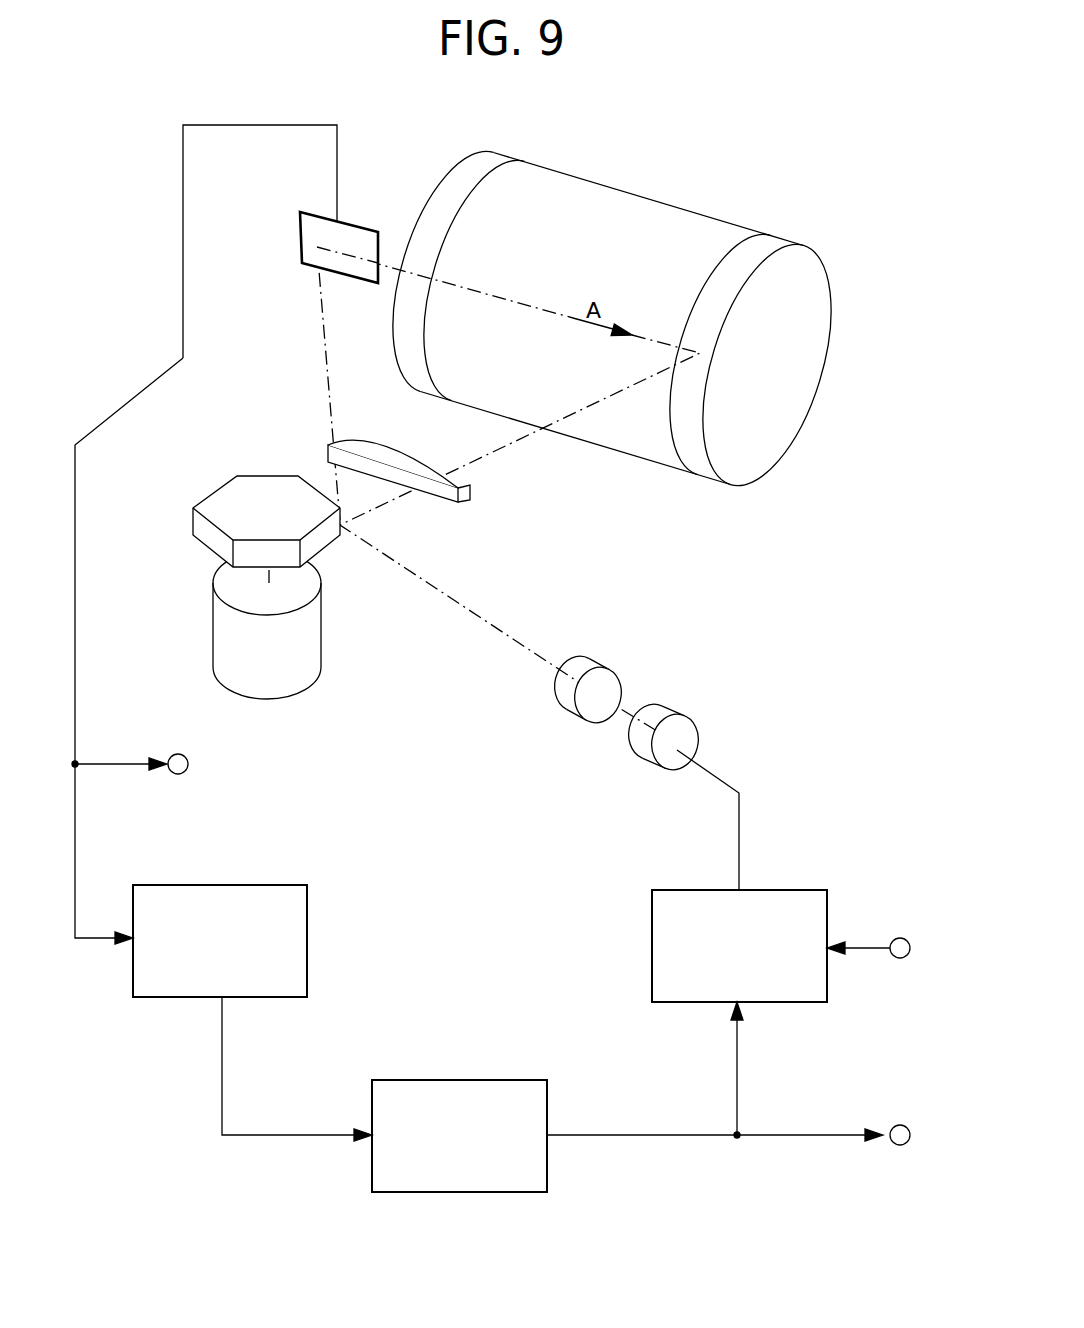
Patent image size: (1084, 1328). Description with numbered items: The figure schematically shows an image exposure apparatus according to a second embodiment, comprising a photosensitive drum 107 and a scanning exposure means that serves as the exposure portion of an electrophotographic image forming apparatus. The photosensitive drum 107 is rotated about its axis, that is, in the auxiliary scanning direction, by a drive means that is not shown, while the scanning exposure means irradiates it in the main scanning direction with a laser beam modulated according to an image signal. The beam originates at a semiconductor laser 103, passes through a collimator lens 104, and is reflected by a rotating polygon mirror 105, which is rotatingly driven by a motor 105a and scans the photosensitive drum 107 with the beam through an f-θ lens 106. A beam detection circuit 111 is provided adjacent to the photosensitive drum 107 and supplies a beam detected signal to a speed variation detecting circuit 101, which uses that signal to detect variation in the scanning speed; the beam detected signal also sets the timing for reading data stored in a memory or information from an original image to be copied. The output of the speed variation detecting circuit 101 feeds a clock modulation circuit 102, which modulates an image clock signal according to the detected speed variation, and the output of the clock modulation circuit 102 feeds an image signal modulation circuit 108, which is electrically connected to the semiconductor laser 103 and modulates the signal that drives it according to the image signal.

The speed variation detecting circuit 101 is at (268, 885).
The clock modulation circuit 102 is at (495, 1080).
The semiconductor laser 103 is at (682, 733).
The collimator lens 104 is at (608, 680).
The rotating polygon mirror 105 is at (225, 500).
The motor 105a is at (318, 633).
The f-θ lens 106 is at (387, 443).
The photosensitive drum 107 is at (683, 211).
The image signal modulation circuit 108 is at (783, 892).
The beam detection circuit 111 is at (306, 247).